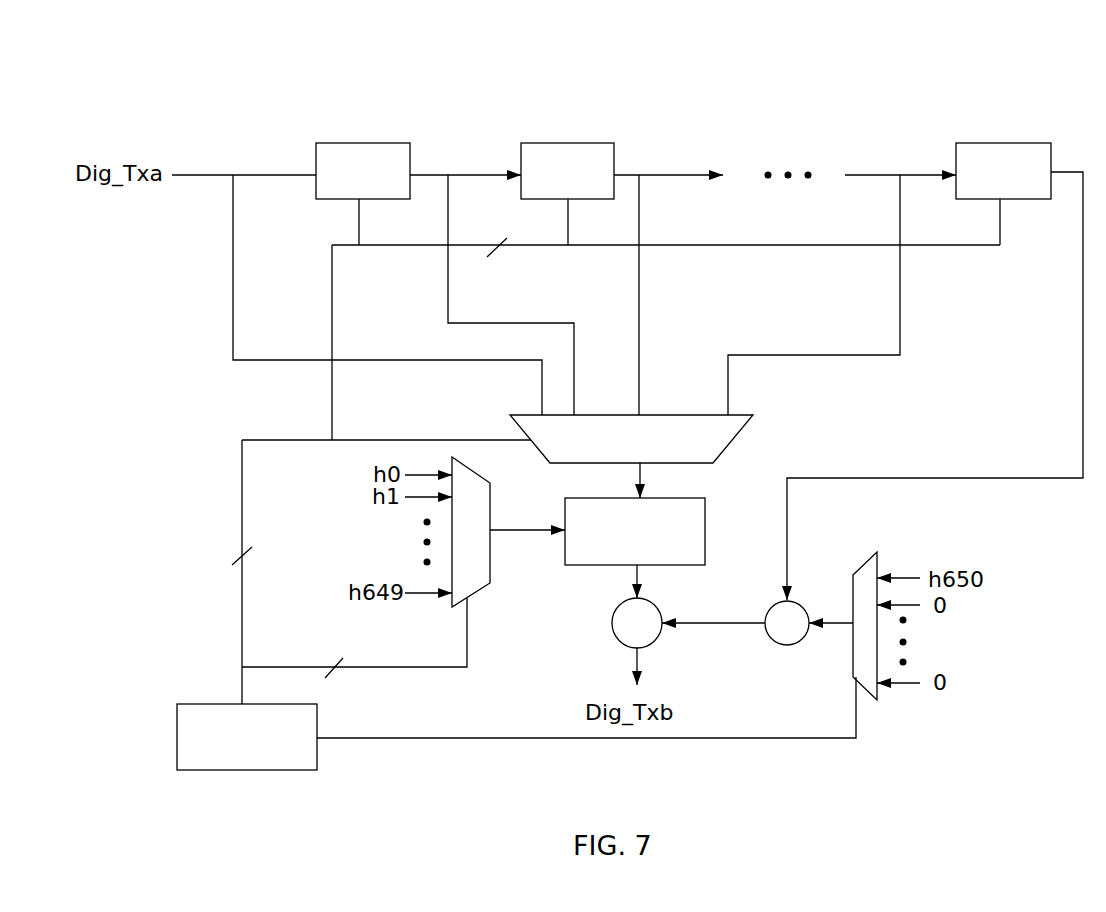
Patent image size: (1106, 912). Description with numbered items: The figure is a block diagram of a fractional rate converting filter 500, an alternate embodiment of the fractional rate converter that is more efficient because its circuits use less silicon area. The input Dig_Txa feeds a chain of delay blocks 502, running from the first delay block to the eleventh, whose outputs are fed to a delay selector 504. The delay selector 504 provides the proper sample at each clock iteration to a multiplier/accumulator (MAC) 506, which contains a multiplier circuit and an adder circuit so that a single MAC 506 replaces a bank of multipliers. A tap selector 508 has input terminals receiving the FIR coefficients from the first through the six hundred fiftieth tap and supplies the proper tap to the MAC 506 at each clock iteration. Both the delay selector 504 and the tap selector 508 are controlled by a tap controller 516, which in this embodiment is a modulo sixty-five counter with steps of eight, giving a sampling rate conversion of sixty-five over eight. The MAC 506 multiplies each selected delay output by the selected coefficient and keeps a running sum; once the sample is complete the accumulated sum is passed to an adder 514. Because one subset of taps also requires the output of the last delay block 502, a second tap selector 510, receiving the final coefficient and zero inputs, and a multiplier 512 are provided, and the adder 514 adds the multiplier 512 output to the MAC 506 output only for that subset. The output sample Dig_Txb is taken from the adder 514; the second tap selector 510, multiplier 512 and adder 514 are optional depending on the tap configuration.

The fractional rate converting filter 500 is at (726, 36).
The delay block 502 is at (360, 143).
The delay selector 504 is at (728, 447).
The multiplier/accumulator (MAC) 506 is at (705, 523).
The tap selector 508 is at (477, 590).
The second tap selector 510 is at (866, 562).
The multiplier 512 is at (798, 642).
The adder 514 is at (658, 638).
The tap controller 516 is at (177, 757).